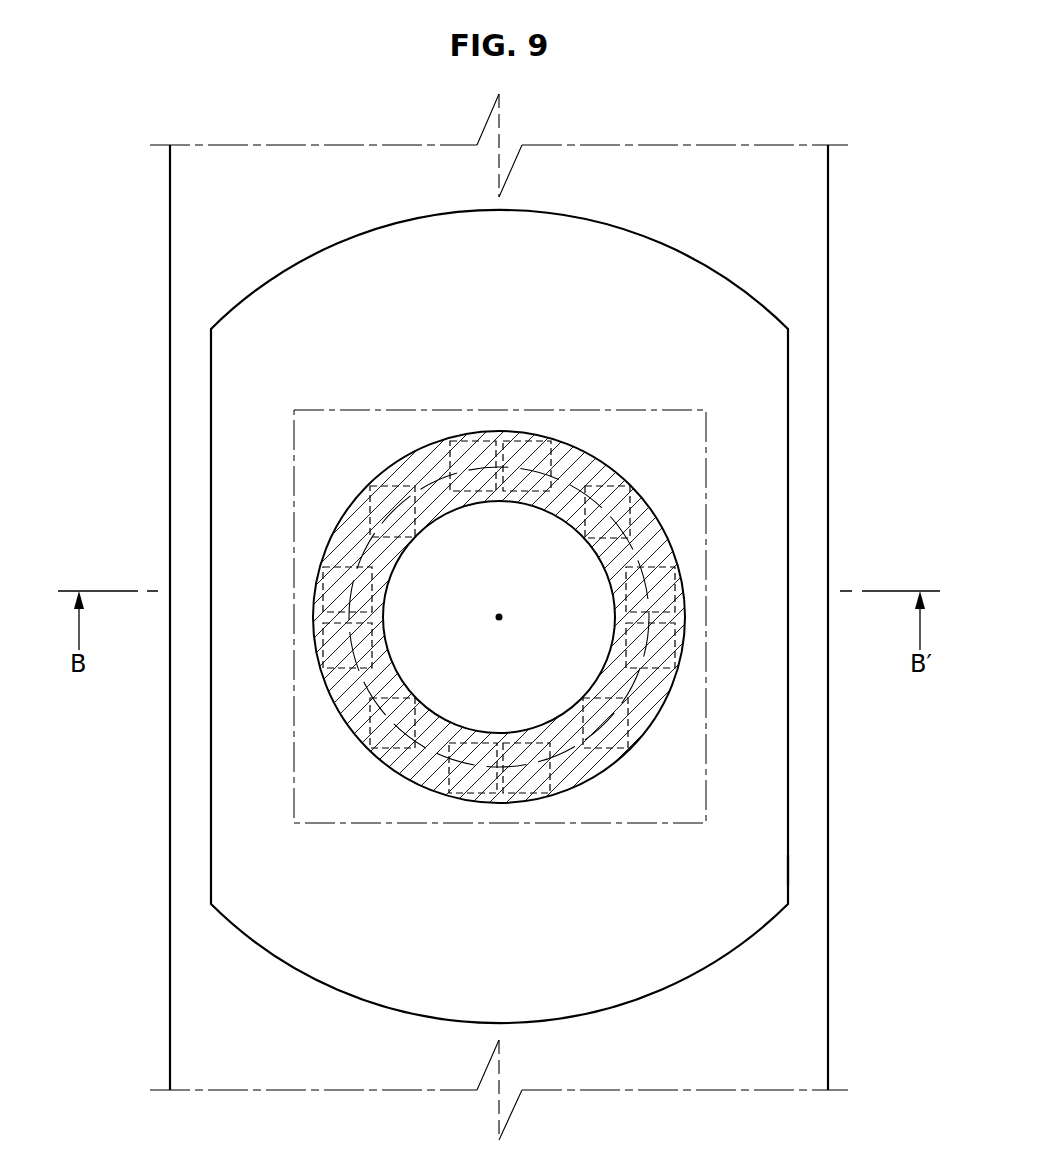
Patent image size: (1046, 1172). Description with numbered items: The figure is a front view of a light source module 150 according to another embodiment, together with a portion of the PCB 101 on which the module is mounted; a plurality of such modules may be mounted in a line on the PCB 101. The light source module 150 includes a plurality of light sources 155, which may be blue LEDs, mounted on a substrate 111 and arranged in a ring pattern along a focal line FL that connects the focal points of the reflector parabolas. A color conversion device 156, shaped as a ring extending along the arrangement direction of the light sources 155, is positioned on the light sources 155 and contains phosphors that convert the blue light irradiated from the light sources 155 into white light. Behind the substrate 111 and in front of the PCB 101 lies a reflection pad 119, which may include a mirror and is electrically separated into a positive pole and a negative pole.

The PCB 101 is at (805, 198).
The light source module 150 is at (790, 312).
The light sources 155 is at (617, 507).
The focal line FL is at (637, 553).
The color conversion device 156 is at (662, 688).
The substrate 111 is at (705, 800).
The reflection pad 119 is at (780, 870).